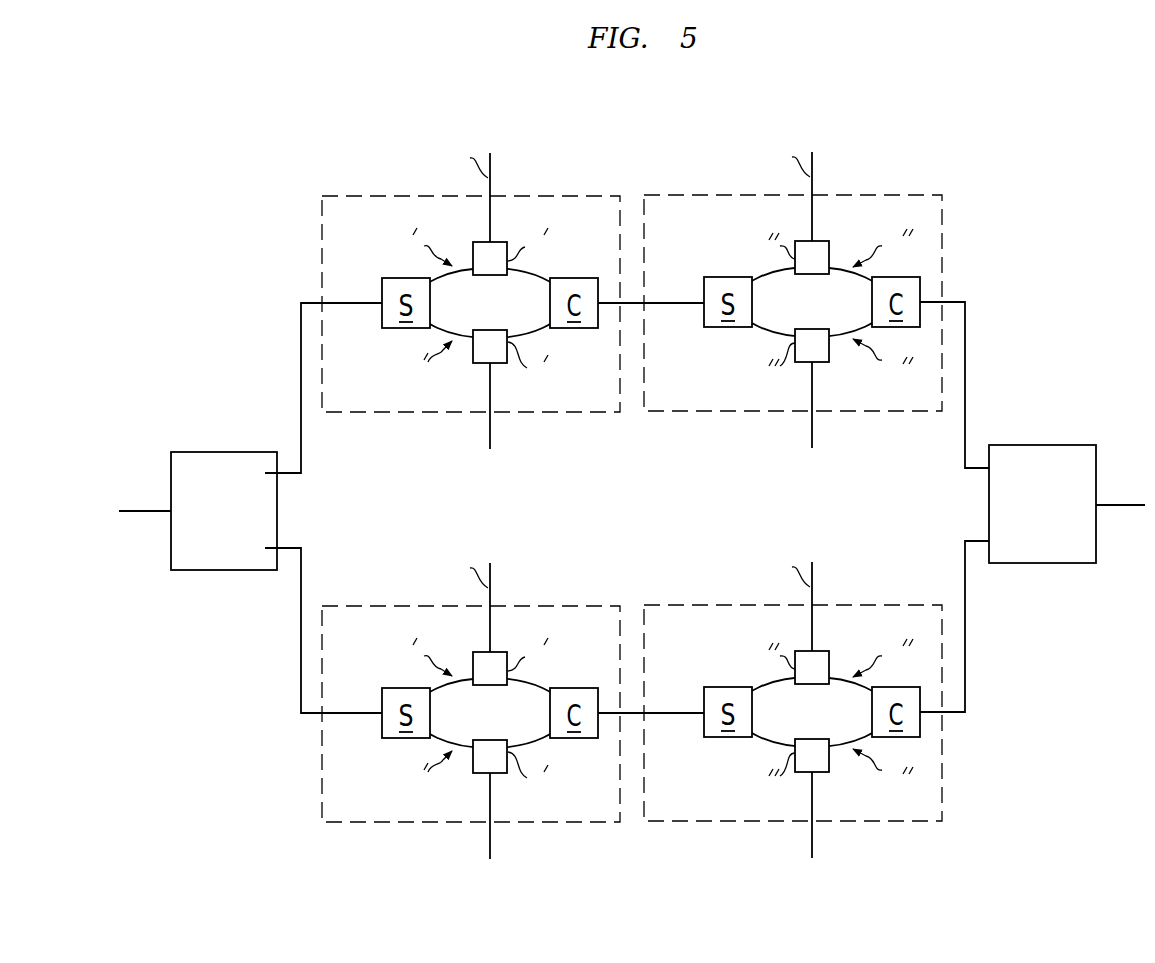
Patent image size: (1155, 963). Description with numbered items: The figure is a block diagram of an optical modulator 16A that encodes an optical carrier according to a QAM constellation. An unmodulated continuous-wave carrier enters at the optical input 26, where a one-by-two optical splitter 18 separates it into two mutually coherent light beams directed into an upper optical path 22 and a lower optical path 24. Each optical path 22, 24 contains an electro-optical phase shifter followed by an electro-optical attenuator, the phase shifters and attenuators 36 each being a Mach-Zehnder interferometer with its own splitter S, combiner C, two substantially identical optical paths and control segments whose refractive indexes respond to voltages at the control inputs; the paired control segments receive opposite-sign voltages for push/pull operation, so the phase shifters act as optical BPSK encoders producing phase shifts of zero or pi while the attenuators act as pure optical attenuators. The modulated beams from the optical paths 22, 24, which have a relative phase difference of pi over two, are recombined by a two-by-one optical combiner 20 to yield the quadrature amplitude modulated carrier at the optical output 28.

The optical modulator 16A is at (632, 514).
The 1×2 optical splitter 18 is at (236, 554).
The 2×1 optical combiner 20 is at (1053, 549).
The optical path 22 is at (300, 389).
The optical path 24 is at (300, 630).
The optical input 26 is at (133, 514).
The optical output 28 is at (1130, 509).
The electro-optical phase shifter and attenuator 36 is at (929, 880).